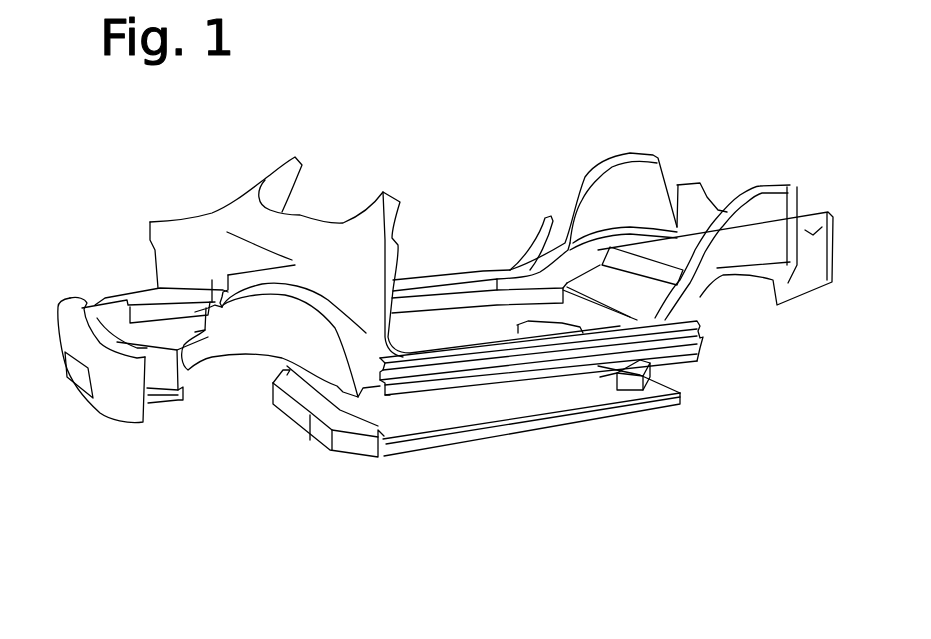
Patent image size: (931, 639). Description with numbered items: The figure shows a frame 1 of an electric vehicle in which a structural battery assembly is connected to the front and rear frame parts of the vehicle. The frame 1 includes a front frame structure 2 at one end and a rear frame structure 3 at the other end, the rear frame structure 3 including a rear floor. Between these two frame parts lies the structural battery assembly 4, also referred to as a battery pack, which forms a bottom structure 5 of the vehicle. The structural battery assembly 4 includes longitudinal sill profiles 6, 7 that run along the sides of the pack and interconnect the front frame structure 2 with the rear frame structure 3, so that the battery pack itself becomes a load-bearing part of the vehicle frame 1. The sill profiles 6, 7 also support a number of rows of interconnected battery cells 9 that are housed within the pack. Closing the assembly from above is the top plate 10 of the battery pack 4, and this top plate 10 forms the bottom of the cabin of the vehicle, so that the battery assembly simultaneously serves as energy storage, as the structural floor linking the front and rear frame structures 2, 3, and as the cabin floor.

The frame 1 is at (121, 165).
The front frame structure 2 is at (212, 357).
The rear frame structure 3 is at (665, 252).
The structural battery assembly 4 is at (703, 395).
The bottom structure 5 is at (457, 323).
The longitudinal sill profile 6 is at (484, 271).
The longitudinal sill profile 7 is at (703, 337).
The battery cells 9 is at (528, 428).
The top plate 10 is at (403, 428).